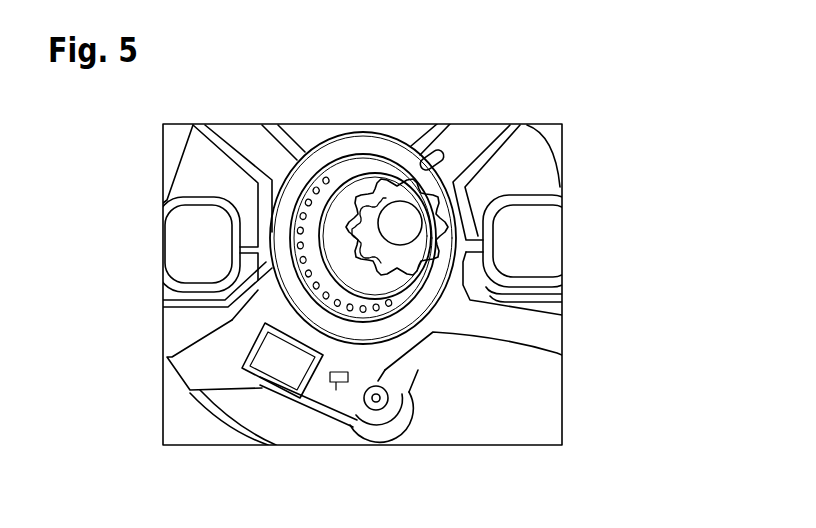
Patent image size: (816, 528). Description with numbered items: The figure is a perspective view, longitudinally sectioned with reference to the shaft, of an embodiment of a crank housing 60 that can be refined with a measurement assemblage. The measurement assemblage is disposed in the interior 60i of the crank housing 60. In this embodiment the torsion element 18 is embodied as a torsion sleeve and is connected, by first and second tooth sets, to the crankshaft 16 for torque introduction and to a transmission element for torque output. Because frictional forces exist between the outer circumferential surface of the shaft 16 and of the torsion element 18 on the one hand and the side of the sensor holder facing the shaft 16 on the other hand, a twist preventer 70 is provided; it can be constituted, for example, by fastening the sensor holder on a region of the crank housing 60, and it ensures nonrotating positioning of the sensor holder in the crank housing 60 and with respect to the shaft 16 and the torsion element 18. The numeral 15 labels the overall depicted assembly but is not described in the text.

The adjusting drive unit 15 is at (592, 118).
The crankshaft 16 is at (398, 220).
The torsion element 18 is at (305, 222).
The crank housing 60 is at (326, 284).
The interior 60i is at (486, 445).
The twist preventer 70 is at (376, 405).